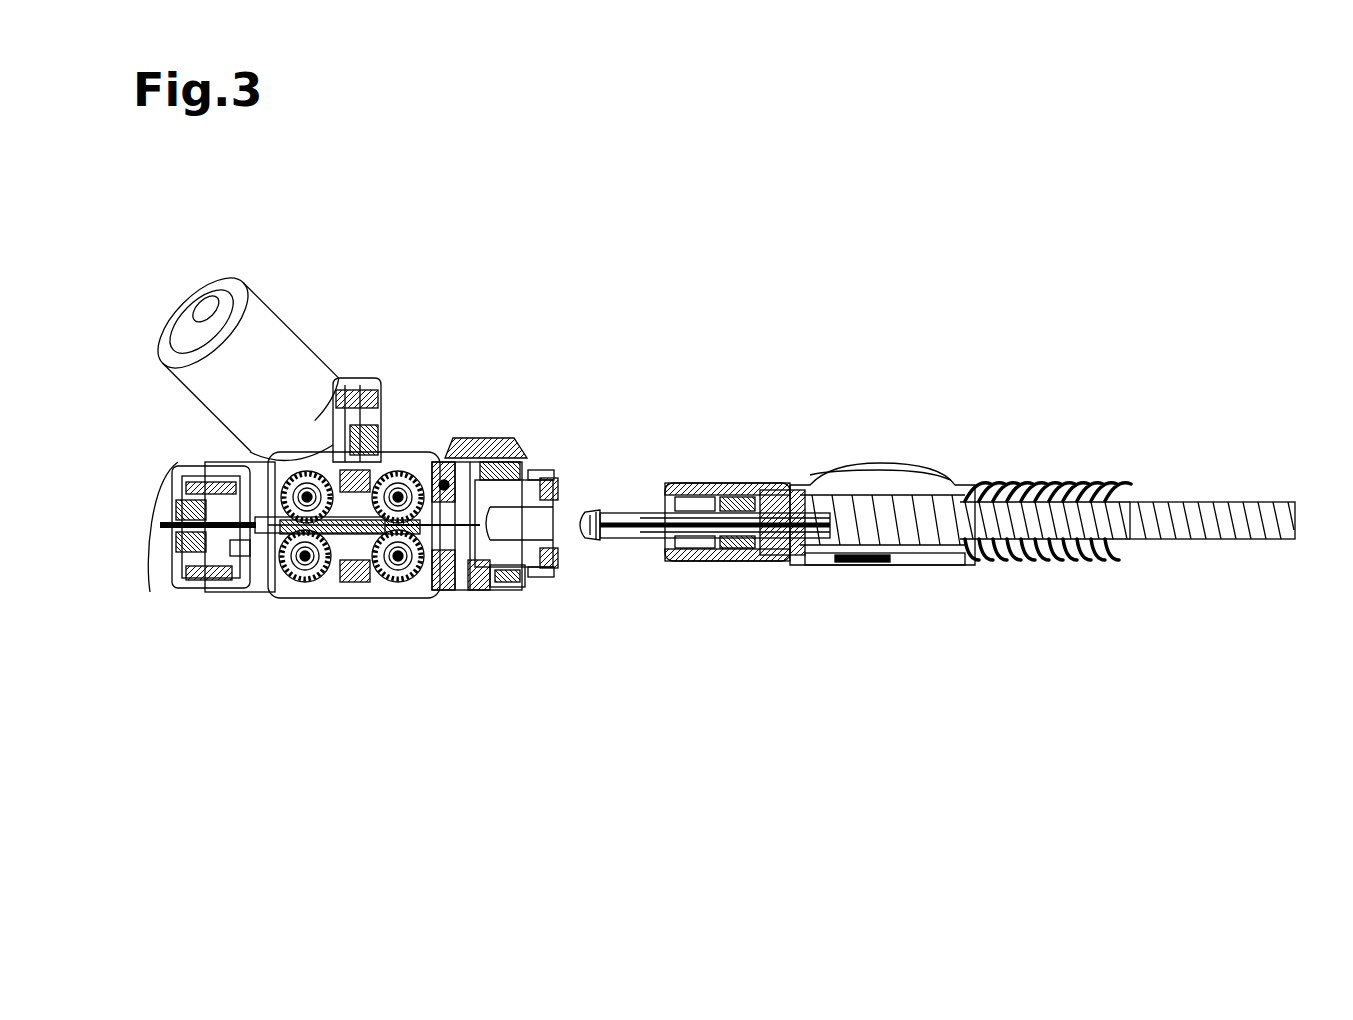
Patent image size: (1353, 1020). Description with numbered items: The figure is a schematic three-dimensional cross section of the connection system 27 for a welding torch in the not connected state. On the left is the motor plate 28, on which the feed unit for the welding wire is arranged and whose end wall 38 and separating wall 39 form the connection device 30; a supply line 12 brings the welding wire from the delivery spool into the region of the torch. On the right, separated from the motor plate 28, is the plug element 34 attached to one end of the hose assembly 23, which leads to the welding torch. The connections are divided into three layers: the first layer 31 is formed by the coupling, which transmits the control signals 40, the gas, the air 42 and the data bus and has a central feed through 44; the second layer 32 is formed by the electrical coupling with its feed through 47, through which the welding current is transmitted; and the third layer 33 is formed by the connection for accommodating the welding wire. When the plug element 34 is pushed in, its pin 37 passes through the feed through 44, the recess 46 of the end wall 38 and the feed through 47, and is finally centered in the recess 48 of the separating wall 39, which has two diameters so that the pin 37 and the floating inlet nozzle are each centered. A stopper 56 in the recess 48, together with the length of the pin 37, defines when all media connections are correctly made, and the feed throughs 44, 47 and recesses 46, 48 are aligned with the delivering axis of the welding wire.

The supply line 12 is at (158, 585).
The hose assembly 23 is at (1162, 505).
The connection system 27 is at (868, 712).
The motor plate 28 is at (385, 298).
The connection device 30 is at (502, 365).
The first layer 31 is at (487, 420).
The second layer 32 is at (445, 428).
The third layer 33 is at (414, 428).
The plug element 34 is at (866, 343).
The pin 37 is at (641, 508).
The end wall 38 is at (480, 588).
The separating wall 39 is at (432, 590).
The control signals 40 is at (708, 487).
The air 42 is at (688, 490).
The feed through 44 is at (532, 470).
The recess 46 is at (492, 590).
The feed through 47 is at (457, 530).
The recess 48 is at (388, 592).
The stopper 56 is at (492, 450).